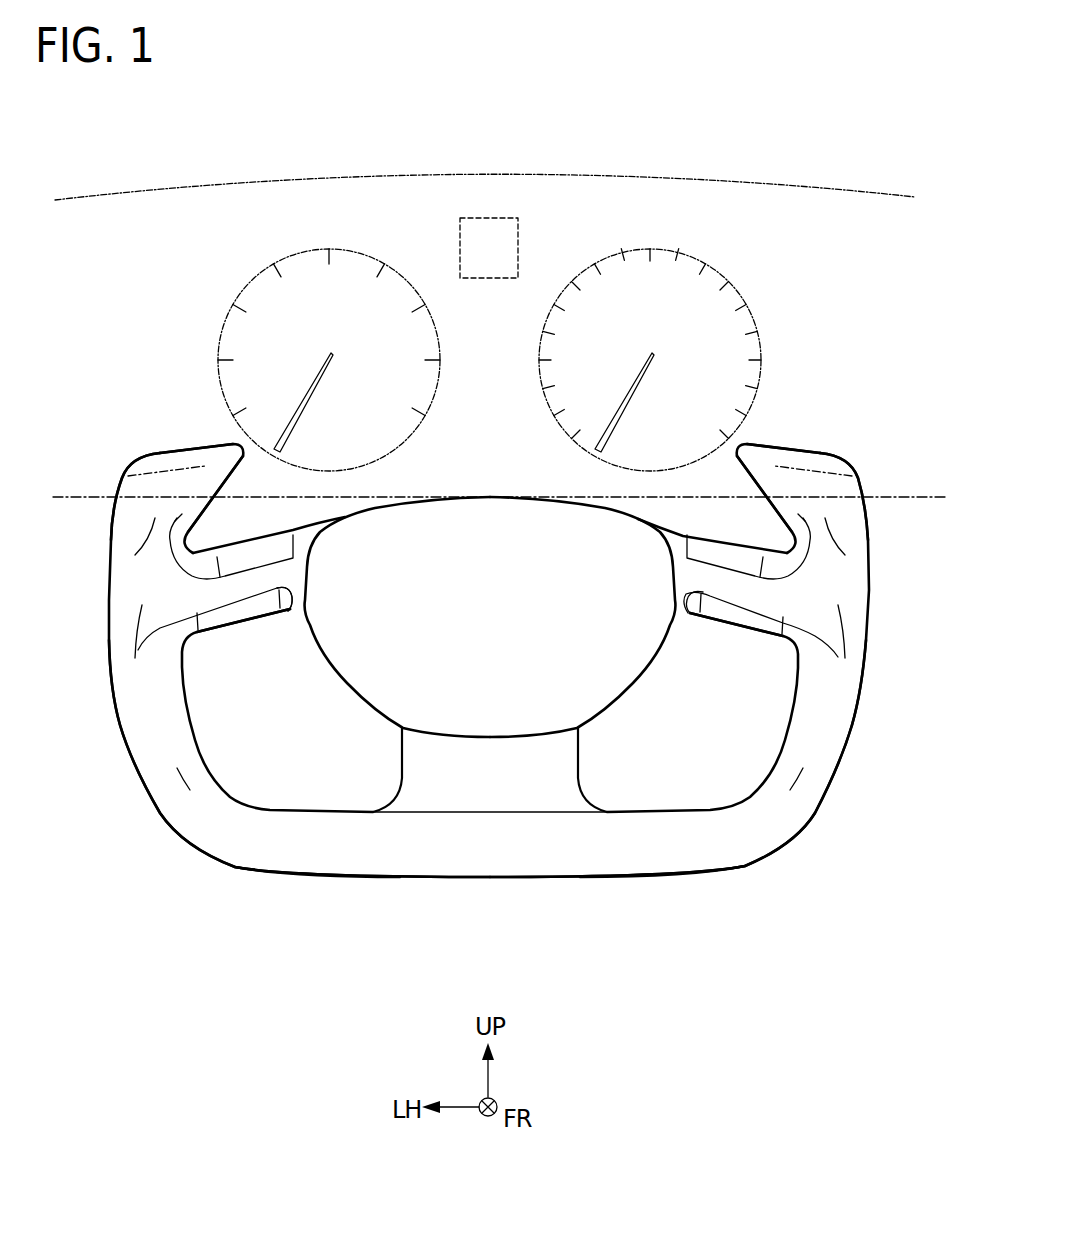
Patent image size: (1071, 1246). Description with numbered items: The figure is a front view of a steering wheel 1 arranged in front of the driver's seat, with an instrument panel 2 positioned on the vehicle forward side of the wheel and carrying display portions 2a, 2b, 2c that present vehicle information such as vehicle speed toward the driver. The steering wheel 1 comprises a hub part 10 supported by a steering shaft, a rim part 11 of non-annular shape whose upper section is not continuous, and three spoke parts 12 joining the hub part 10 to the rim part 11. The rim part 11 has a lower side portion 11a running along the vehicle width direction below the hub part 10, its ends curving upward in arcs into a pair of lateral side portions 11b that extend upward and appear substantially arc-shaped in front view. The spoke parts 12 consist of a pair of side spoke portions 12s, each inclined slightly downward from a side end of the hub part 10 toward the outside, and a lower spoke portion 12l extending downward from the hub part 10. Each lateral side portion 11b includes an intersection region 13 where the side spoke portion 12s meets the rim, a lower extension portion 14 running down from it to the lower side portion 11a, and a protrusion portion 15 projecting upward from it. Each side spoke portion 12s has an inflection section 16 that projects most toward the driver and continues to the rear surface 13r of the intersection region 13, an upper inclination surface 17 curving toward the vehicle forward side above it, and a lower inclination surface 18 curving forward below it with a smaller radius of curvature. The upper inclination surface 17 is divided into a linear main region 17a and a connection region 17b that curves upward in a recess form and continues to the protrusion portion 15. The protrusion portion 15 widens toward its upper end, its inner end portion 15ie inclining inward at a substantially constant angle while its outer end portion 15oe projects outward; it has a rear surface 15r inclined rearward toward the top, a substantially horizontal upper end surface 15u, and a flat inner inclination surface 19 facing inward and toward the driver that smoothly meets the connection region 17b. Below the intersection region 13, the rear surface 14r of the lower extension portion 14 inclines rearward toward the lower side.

The steering wheel 1 is at (846, 365).
The instrument panel 2 is at (785, 232).
The display portion 2a is at (225, 315).
The display portion 2b is at (730, 280).
The display portion 2c is at (520, 245).
The hub part 10 is at (608, 716).
The rim part 11 is at (733, 869).
The lower side portion 11a is at (510, 868).
The lateral side portion 11b is at (490, 638).
The spoke part 12 is at (492, 762).
The side spoke portion 12s is at (290, 607).
The lower spoke portion 12l is at (394, 760).
The intersection region 13 is at (487, 691).
The rear surface of the intersection region 13r is at (143, 607).
The lower extension portion 14 is at (501, 797).
The rear surface of the lower extension portion 14r is at (187, 805).
The protrusion portion 15 is at (490, 475).
The inner end portion 15ie is at (245, 456).
The outer end portion 15oe is at (118, 483).
The rear surface of the protrusion portion 15r is at (135, 555).
The upper end surface 15u is at (147, 447).
The inflection section 16 is at (282, 612).
The upper inclination surface 17 is at (490, 478).
The main region 17a is at (250, 553).
The connection region 17b is at (203, 562).
The lower inclination surface 18 is at (245, 624).
The inner inclination surface 19 is at (153, 455).